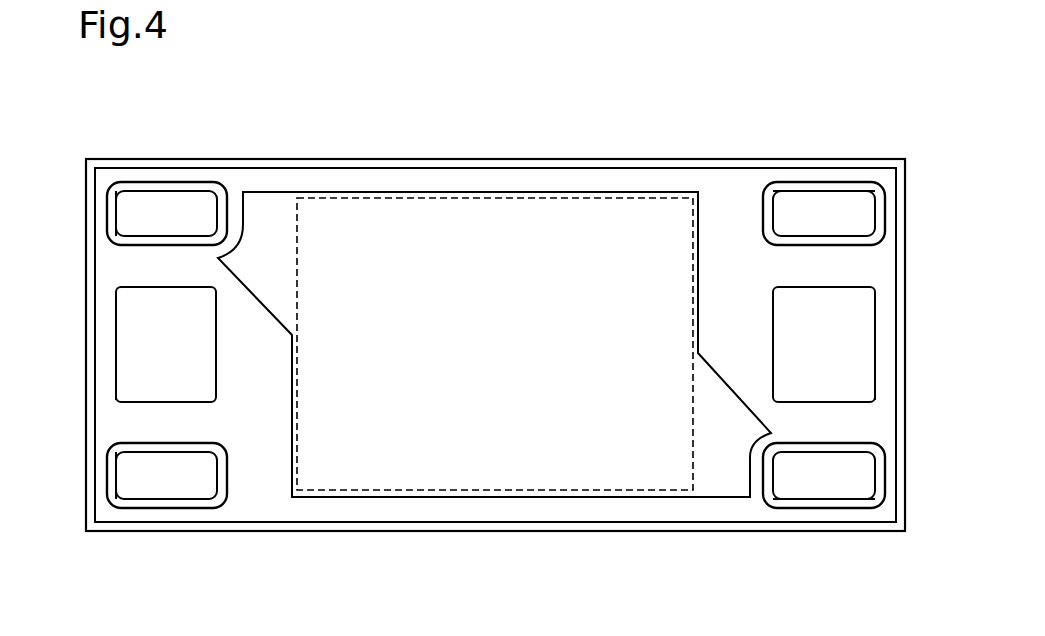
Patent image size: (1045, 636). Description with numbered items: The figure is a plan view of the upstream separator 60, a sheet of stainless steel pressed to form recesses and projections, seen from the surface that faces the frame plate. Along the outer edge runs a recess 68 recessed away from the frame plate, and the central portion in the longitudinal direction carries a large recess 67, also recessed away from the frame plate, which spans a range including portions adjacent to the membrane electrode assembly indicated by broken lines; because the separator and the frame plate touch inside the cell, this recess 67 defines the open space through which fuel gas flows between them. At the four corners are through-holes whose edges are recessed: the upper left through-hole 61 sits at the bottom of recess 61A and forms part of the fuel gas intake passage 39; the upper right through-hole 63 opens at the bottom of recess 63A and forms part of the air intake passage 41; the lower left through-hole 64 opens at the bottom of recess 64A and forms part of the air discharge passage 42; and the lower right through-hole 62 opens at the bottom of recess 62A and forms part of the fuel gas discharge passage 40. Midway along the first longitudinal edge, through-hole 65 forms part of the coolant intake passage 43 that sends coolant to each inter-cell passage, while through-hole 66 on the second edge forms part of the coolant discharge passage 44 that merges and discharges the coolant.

The upstream separator 60 is at (605, 135).
The recess 67 is at (455, 216).
The recess 68 is at (352, 166).
The through-hole 61 is at (155, 197).
The recess 61A is at (111, 206).
The fuel gas intake passage 39 is at (189, 208).
The through-hole 63 is at (793, 198).
The recess 63A is at (835, 188).
The air intake passage 41 is at (857, 210).
The coolant intake passage 43 is at (138, 310).
The through-hole 65 is at (122, 347).
The coolant discharge passage 44 is at (833, 313).
The through-hole 66 is at (868, 365).
The through-hole 64 is at (142, 493).
The recess 64A is at (111, 474).
The air discharge passage 42 is at (189, 482).
The through-hole 62 is at (808, 493).
The recess 62A is at (862, 504).
The fuel gas discharge passage 40 is at (853, 472).